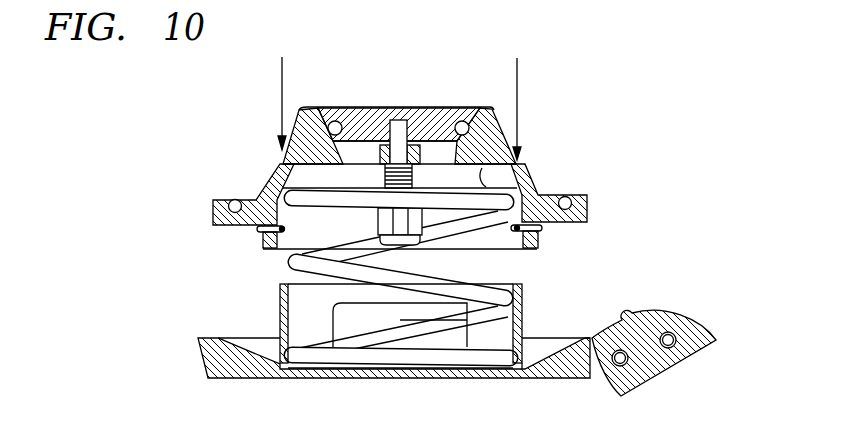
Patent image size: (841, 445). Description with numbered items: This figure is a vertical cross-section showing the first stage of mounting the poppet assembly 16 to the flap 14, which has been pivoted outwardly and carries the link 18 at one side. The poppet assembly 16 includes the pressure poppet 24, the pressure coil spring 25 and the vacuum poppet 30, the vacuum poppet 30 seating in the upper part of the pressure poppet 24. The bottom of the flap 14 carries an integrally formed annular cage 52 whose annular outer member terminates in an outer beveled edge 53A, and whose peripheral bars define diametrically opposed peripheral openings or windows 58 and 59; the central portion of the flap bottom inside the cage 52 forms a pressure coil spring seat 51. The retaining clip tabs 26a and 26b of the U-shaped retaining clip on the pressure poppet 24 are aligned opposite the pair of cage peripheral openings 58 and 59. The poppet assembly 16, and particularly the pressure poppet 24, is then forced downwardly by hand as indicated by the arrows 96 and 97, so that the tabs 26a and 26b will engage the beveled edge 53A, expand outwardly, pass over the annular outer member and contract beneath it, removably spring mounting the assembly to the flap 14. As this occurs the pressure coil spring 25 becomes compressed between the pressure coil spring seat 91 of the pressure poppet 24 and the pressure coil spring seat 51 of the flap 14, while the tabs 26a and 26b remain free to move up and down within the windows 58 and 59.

The poppet assembly 16 is at (415, 56).
The vacuum poppet 30 is at (342, 105).
The arrow 97 is at (282, 79).
The arrow 96 is at (518, 73).
The pressure coil spring seat 91 is at (500, 172).
The pressure poppet 24 is at (522, 185).
The retaining clip tab 26b is at (284, 229).
The retaining clip tab 26a is at (512, 228).
The pressure coil spring 25 is at (472, 297).
The outer beveled edge 53A is at (521, 298).
The cage 52 is at (279, 285).
The cage peripheral opening 59 is at (288, 320).
The cage peripheral opening 58 is at (522, 331).
The pressure coil spring seat 51 is at (313, 369).
The flap 14 is at (557, 378).
The link 18 is at (673, 370).